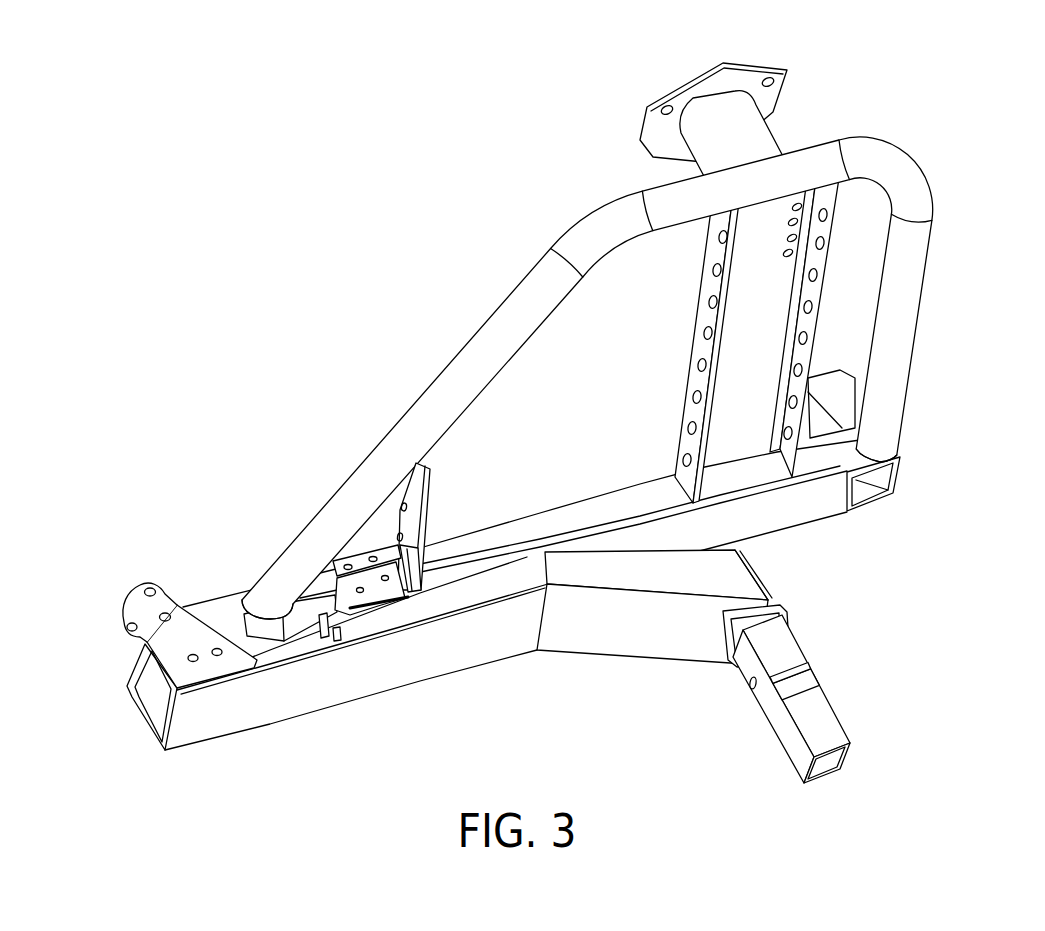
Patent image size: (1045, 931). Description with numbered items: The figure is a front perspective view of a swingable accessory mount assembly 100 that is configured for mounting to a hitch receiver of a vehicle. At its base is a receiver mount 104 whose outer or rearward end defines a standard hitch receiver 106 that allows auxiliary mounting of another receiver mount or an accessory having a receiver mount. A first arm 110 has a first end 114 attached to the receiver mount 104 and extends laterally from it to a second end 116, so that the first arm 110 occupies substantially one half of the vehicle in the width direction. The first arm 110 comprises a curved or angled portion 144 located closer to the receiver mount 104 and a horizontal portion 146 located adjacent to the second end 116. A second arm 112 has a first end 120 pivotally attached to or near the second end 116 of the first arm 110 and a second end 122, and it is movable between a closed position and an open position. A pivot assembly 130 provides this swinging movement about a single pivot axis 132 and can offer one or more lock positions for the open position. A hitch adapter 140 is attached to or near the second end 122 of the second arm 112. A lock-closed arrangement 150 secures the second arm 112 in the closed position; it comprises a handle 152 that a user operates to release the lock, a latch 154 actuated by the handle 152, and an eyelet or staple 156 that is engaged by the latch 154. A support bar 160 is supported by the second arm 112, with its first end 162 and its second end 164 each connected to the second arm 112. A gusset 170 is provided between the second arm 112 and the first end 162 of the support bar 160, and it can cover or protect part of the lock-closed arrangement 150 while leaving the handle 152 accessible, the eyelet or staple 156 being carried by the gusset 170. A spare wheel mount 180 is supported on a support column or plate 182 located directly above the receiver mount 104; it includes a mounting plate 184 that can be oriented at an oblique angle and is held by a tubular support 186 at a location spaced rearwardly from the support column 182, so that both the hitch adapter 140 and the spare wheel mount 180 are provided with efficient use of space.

The accessory mount assembly 100 is at (527, 413).
The receiver mount 104 is at (769, 752).
The hitch receiver 106 is at (738, 551).
The first arm 110 is at (484, 593).
The second arm 112 is at (484, 593).
The first end 114 is at (686, 659).
The second end 116 is at (273, 667).
The first end 120 is at (214, 579).
The second end 122 is at (836, 530).
The pivot assembly 130 is at (136, 715).
The pivot axis 132 is at (158, 617).
The hitch adapter 140 is at (895, 522).
The curved or angled portion 144 is at (614, 632).
The horizontal portion 146 is at (438, 667).
The lock-closed arrangement 150 is at (401, 676).
The handle 152 is at (314, 625).
The latch 154 is at (348, 600).
The eyelet or staple 156 is at (420, 598).
The support bar 160 is at (624, 378).
The first end 162 is at (350, 478).
The second end 164 is at (921, 322).
The gusset 170 is at (435, 488).
The spare wheel mount 180 is at (690, 284).
The support column or plate 182 is at (697, 367).
The mounting plate 184 is at (775, 70).
The tubular support 186 is at (762, 148).